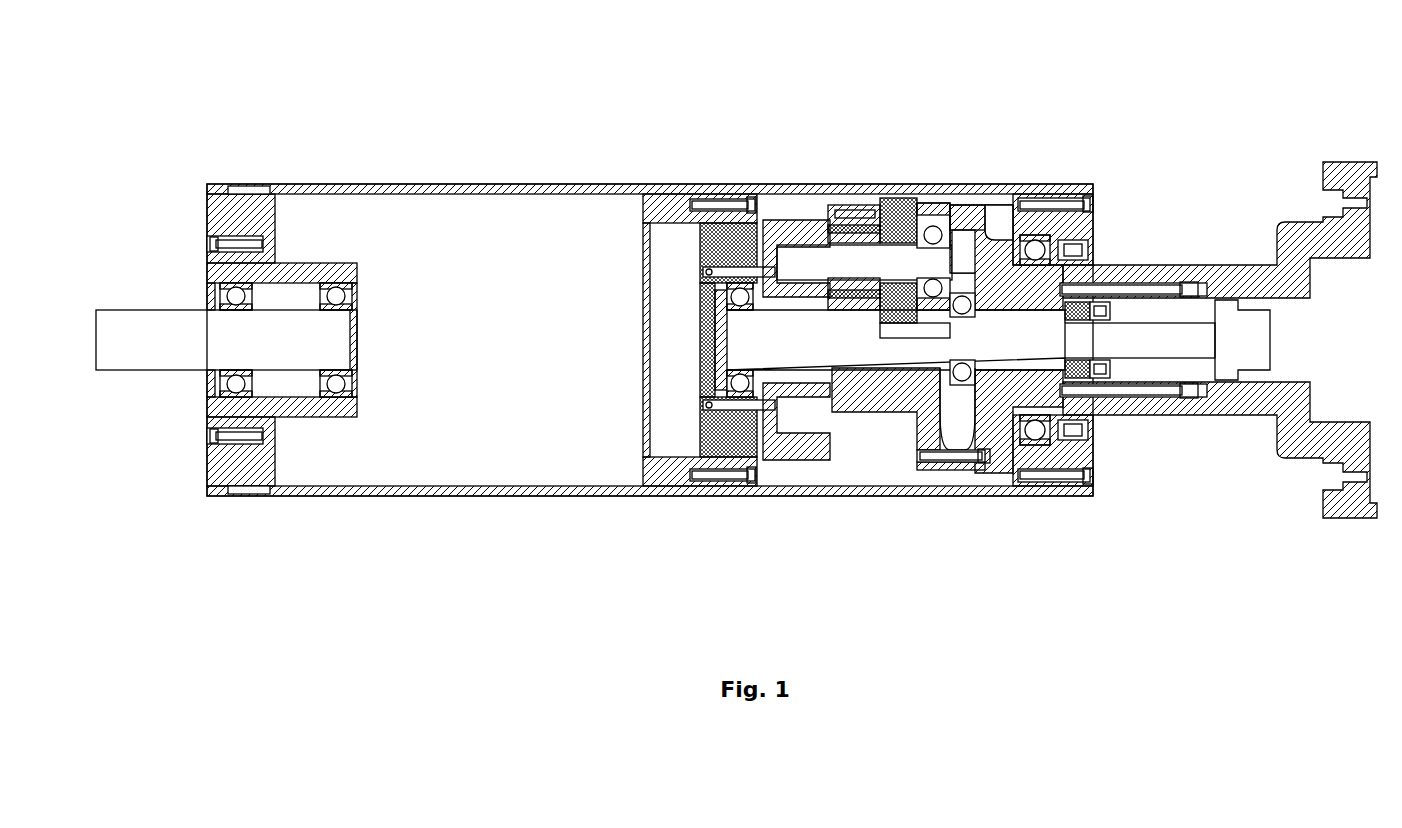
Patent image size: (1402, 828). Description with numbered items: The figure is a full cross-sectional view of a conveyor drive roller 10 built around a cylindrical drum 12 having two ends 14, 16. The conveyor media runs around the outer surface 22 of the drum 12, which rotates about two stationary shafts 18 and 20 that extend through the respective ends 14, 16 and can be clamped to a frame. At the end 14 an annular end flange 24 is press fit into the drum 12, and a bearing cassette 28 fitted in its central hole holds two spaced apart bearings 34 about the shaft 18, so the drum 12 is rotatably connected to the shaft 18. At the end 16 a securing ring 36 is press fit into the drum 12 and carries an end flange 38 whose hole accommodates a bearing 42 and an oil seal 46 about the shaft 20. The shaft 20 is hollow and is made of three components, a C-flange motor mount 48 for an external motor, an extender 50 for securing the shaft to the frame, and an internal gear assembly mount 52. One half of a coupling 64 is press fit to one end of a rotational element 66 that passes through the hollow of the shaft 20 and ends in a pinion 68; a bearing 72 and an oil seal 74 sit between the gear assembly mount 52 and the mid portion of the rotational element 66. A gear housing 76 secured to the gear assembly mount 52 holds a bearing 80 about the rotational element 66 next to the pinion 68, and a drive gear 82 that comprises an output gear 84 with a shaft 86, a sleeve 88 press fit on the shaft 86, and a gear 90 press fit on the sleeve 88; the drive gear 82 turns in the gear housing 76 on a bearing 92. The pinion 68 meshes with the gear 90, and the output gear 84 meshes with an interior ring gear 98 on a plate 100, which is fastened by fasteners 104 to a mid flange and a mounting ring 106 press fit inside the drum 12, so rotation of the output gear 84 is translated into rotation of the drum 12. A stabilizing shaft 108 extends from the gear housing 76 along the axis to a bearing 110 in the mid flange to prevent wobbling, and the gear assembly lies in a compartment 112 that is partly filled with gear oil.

The conveyor drive roller 10 is at (934, 78).
The cylindrical drum 12 is at (500, 185).
The end 14 is at (189, 204).
The end 16 is at (1141, 205).
The stationary shaft 18 is at (136, 350).
The stationary shaft 20 is at (1183, 405).
The outer surface 22 is at (395, 185).
The annular end flange 24 is at (252, 210).
The bearing cassette 28 is at (300, 265).
The bearings 34 is at (222, 382).
The securing ring 36 is at (1035, 200).
The end flange 38 is at (1085, 232).
The bearing 42 is at (1003, 225).
The oil seal 46 is at (1090, 440).
The C-flange motor mount 48 is at (1245, 260).
The extender 50 is at (1155, 270).
The internal gear assembly mount 52 is at (968, 205).
The coupling half 64 is at (1245, 372).
The rotational element 66 is at (1157, 342).
The pinion 68 is at (908, 395).
The bearing 72 is at (1060, 468).
The oil seal 74 is at (1110, 380).
The gear housing 76 is at (878, 415).
The bearing 80 is at (958, 415).
The drive gear 82 is at (917, 130).
The output gear 84 is at (797, 215).
The shaft 86 is at (840, 205).
The sleeve 88 is at (866, 205).
The gear 90 is at (898, 198).
The bearing 92 is at (935, 203).
The interior ring gear 98 is at (778, 460).
The plate 100 is at (797, 460).
The fasteners 104 is at (727, 458).
The mounting ring 106 is at (656, 194).
The stabilizing shaft 108 is at (812, 351).
The bearing 110 is at (700, 390).
The compartment 112 is at (845, 481).